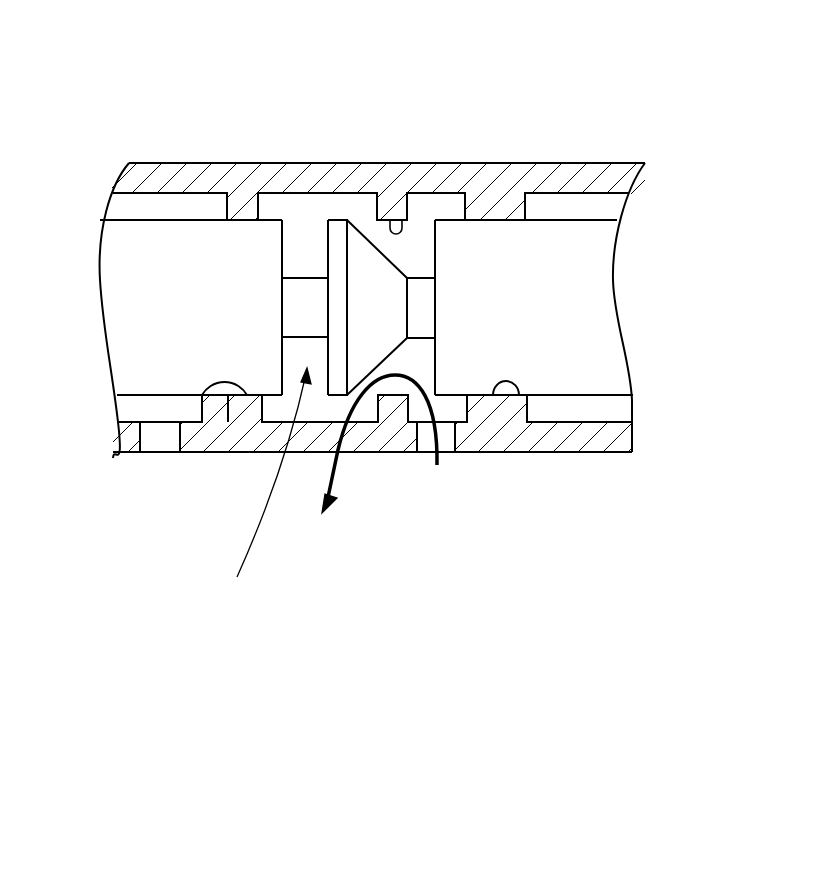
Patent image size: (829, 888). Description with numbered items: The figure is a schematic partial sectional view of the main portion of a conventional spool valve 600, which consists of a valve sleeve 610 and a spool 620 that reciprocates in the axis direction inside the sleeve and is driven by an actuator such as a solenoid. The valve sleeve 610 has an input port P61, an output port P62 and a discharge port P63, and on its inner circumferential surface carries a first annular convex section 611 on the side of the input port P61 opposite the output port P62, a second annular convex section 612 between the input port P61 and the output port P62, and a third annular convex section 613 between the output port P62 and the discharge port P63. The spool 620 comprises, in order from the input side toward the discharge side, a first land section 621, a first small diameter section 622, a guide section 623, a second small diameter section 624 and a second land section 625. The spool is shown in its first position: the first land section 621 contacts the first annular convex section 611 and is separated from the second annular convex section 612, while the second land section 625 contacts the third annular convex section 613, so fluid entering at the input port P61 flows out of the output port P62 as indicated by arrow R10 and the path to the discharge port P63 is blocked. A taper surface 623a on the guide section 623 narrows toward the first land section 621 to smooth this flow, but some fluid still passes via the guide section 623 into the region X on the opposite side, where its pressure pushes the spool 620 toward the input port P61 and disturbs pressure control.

The spool valve 600 is at (539, 118).
The valve sleeve 610 is at (153, 152).
The first annular convex section 611 is at (517, 395).
The second annular convex section 612 is at (405, 263).
The third annular convex section 613 is at (207, 398).
The spool 620 is at (579, 409).
The first land section 621 is at (595, 325).
The first small diameter section 622 is at (422, 287).
The guide section 623 is at (343, 245).
The taper surface 623a is at (397, 225).
The second small diameter section 624 is at (309, 287).
The second land section 625 is at (143, 293).
The input port P61 is at (455, 438).
The output port P62 is at (352, 435).
The discharge port P63 is at (147, 442).
The arrow R10 is at (367, 460).
The region X is at (269, 488).